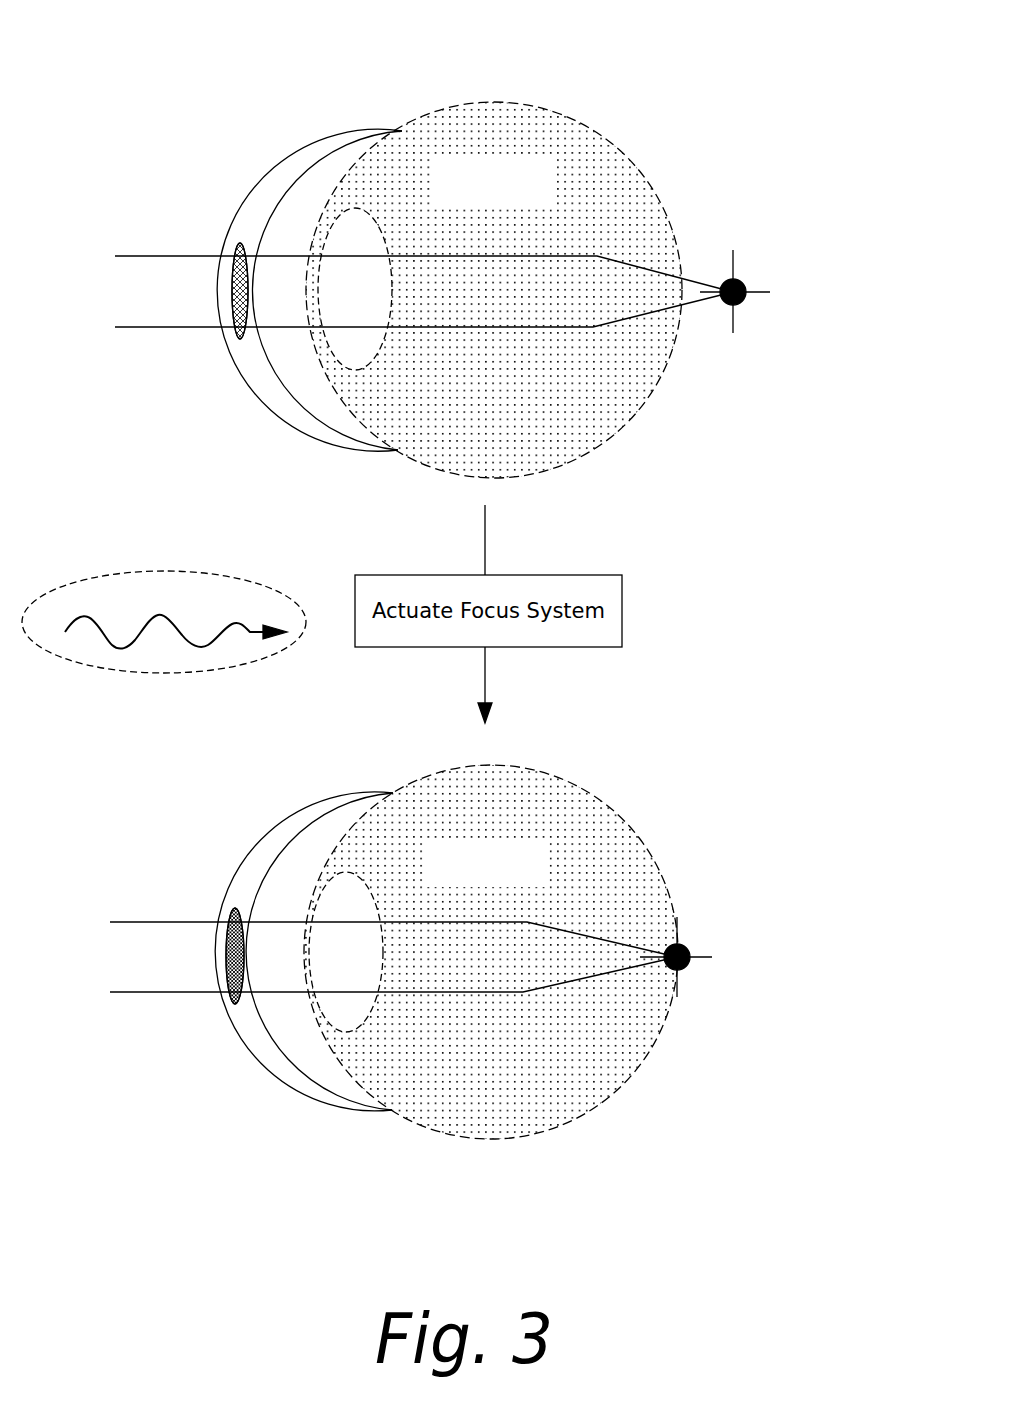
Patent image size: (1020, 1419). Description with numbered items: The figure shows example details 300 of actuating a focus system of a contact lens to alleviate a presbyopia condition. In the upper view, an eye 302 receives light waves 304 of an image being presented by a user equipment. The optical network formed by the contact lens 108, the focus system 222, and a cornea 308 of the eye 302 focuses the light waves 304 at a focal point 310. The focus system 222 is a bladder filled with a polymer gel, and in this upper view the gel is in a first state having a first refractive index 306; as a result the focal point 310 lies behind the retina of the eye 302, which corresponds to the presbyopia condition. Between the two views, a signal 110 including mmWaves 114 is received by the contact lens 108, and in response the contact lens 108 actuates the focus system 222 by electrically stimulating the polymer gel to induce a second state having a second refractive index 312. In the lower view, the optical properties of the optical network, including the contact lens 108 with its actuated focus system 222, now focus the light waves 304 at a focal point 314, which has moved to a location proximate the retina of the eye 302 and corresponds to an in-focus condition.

The example details of actuating a focus system 300 is at (749, 32).
The eye 302 is at (493, 620).
The contact lens 108 is at (248, 200).
The focus system 222 is at (237, 247).
The light waves 304 is at (217, 255).
The first refractive index 306 is at (235, 297).
The cornea 308 is at (283, 347).
The focal point 310 is at (745, 282).
The second refractive index 312 is at (232, 958).
The focal point 314 is at (688, 947).
The signal 110 is at (130, 673).
The mmWave 114 is at (118, 637).